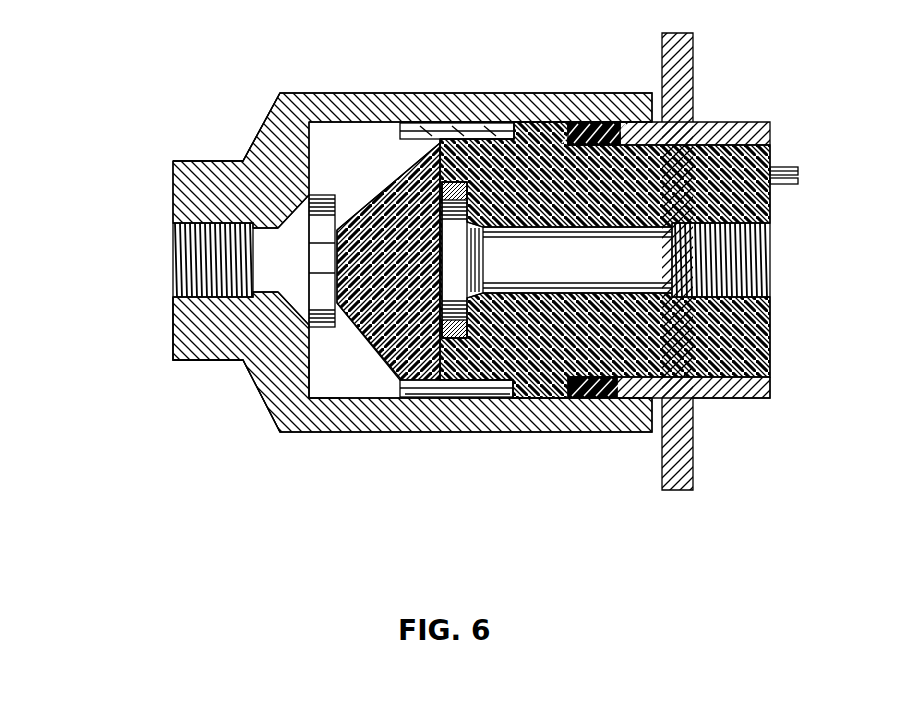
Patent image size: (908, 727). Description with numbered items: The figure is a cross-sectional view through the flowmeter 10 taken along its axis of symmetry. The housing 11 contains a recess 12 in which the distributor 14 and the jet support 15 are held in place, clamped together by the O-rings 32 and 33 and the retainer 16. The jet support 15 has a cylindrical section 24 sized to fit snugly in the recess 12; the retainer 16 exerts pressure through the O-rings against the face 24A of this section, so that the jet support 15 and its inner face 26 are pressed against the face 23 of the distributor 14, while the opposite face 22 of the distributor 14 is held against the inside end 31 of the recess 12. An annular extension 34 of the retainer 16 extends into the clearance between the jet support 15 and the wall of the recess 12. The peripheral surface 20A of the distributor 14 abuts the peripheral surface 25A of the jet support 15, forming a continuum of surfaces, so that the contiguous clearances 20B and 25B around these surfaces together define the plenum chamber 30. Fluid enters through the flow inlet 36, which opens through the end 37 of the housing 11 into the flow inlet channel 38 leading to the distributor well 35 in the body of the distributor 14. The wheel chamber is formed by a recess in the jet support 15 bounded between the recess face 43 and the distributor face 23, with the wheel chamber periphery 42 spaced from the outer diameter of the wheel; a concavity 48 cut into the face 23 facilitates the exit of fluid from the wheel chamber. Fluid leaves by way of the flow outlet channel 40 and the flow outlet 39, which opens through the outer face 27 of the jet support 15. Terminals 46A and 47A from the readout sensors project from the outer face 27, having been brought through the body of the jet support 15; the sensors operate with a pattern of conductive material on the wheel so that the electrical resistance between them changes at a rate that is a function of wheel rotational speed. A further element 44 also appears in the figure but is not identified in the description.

The flowmeter 10 is at (212, 148).
The housing 11 is at (248, 133).
The recess 12 is at (348, 156).
The distributor 14 is at (284, 120).
The jet support 15 is at (545, 370).
The retainer 16 is at (710, 127).
The peripheral surface 20A is at (414, 400).
The clearance 20B is at (360, 123).
The face 22 is at (345, 335).
The face 23 is at (438, 372).
The cylindrical section 24 is at (538, 122).
The face 24A is at (582, 398).
The peripheral surface 25A is at (500, 398).
The clearance 25B is at (438, 123).
The jet support inner face 26 is at (456, 342).
The jet support outer face 27 is at (770, 346).
The plenum chamber 30 is at (399, 124).
The inside end of recess 31 is at (310, 372).
The O-ring 32 is at (558, 122).
The O-ring 33 is at (613, 124).
The annular extension 34 is at (630, 122).
The distributor well 35 is at (307, 303).
The flow inlet 36 is at (176, 292).
The end of housing 37 is at (176, 322).
The flow inlet channel 38 is at (272, 300).
The flow outlet 39 is at (770, 298).
The flow outlet channel 40 is at (607, 226).
The wheel chamber periphery 42 is at (465, 176).
The recess face 43 is at (540, 368).
The stem 44 is at (473, 268).
The terminal 46A is at (797, 168).
The terminal 47A is at (797, 184).
The concavity 48 is at (396, 372).